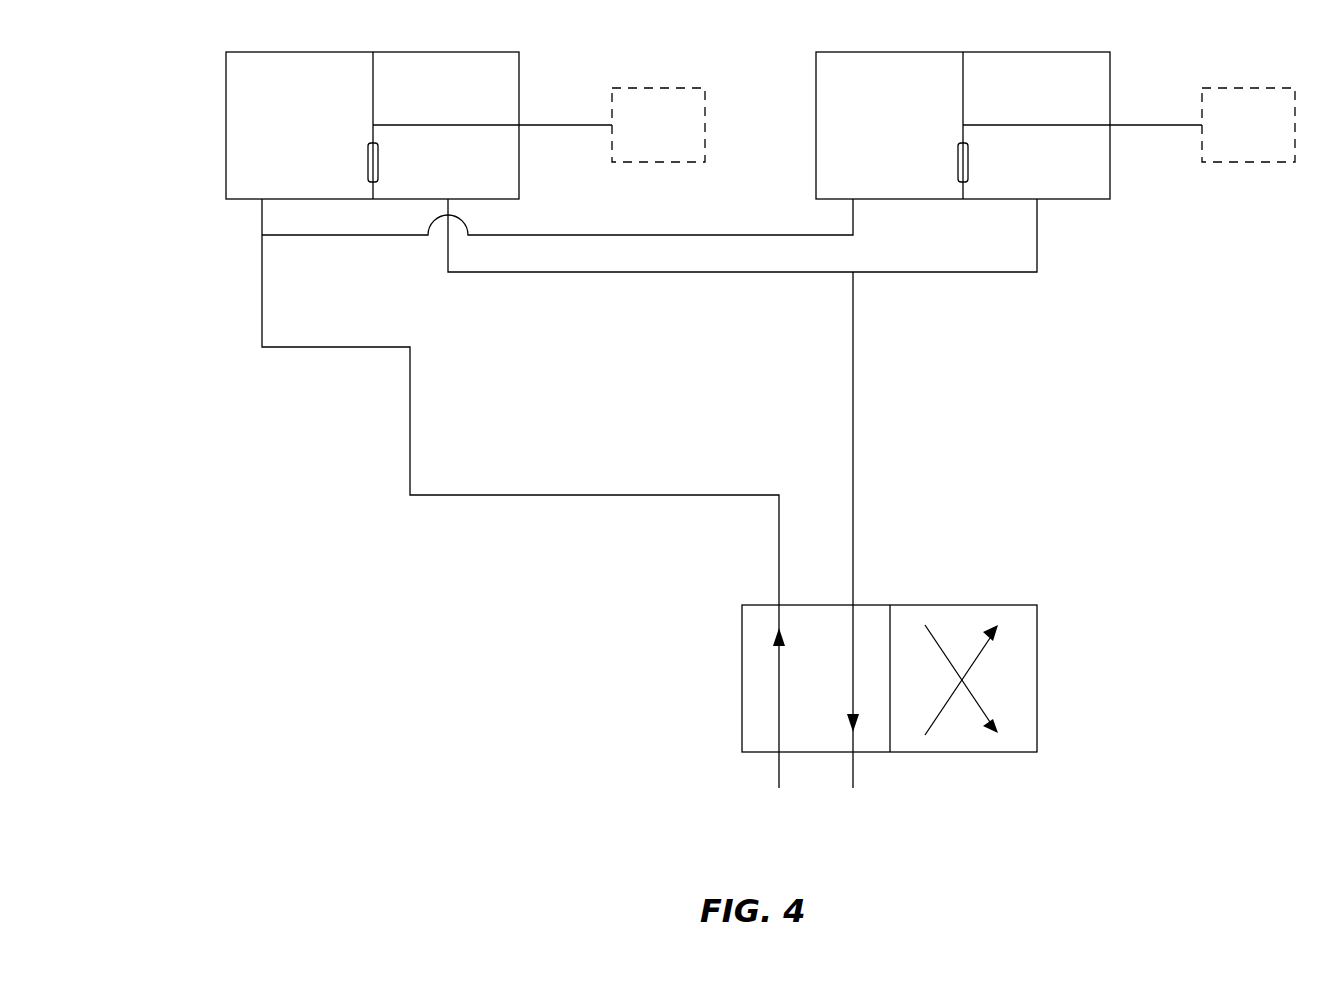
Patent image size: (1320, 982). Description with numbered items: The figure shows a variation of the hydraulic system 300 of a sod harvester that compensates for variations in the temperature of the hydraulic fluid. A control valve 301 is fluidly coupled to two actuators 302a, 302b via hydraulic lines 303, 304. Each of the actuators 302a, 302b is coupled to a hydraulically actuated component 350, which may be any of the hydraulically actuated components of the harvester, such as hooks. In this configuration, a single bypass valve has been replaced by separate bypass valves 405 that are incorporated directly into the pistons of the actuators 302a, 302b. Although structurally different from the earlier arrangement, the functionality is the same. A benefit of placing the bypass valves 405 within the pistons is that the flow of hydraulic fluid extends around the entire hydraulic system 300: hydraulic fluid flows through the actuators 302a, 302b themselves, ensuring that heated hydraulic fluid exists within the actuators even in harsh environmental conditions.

The hydraulic system 300 is at (297, 607).
The control valve 301 is at (1000, 604).
The actuator 302a is at (226, 103).
The actuator 302b is at (816, 103).
The hydraulic line 303 is at (408, 468).
The hydraulic line 304 is at (855, 456).
The hydraulically actuated component 350 is at (953, 125).
The bypass valve 405 is at (368, 158).